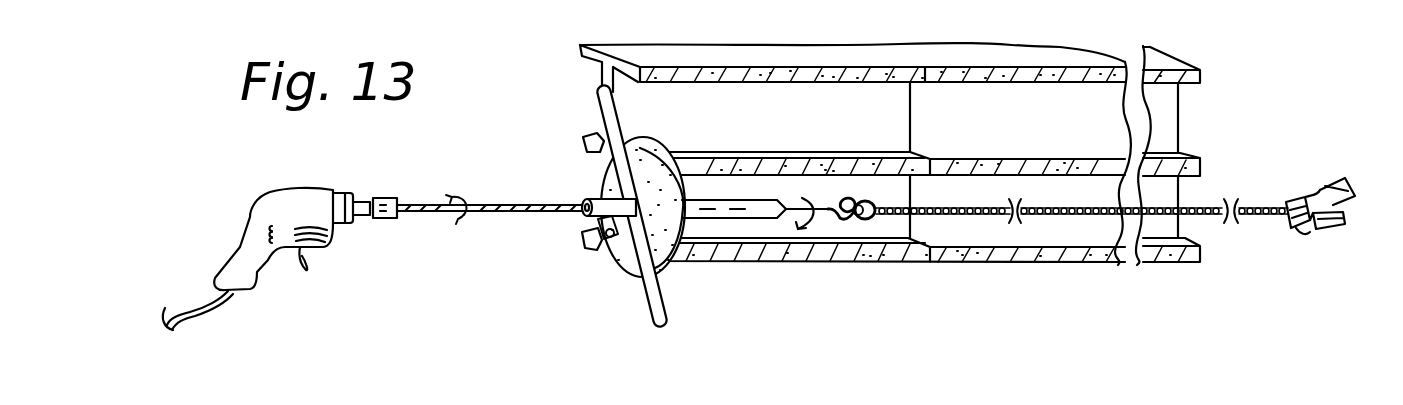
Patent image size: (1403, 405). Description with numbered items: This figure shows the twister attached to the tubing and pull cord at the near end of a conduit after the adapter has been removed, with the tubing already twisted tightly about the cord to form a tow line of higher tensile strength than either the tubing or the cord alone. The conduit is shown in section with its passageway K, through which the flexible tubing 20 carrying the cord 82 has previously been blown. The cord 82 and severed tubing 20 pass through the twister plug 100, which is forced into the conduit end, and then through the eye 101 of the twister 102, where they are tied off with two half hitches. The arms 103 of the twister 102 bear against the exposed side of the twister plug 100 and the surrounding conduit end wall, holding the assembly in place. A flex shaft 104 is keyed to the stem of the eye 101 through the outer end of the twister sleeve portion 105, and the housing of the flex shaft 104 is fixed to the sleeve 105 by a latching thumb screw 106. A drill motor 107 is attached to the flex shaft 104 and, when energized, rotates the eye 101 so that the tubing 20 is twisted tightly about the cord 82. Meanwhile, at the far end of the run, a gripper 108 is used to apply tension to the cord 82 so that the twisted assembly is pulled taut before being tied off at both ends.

The twister plug 100 is at (695, 187).
The eye 101 is at (856, 186).
The twister 102 is at (615, 258).
The arms 103 is at (600, 104).
The flex shaft 104 is at (490, 224).
The twister sleeve portion 105 is at (590, 199).
The latching thumb screw 106 is at (600, 247).
The drill motor 107 is at (300, 249).
The gripper 108 is at (1320, 237).
The tubing 20 is at (1082, 200).
The cord 82 is at (986, 206).
The passageway K is at (746, 48).